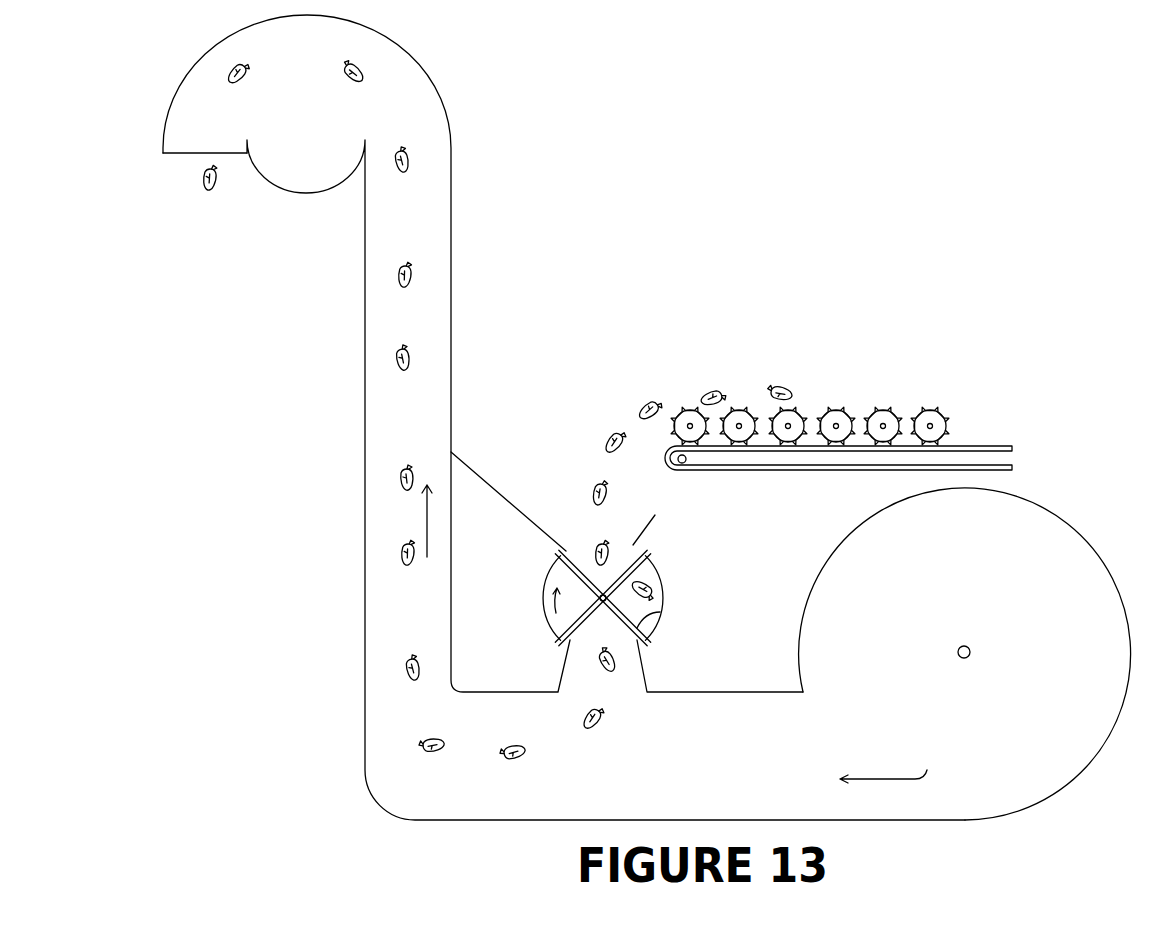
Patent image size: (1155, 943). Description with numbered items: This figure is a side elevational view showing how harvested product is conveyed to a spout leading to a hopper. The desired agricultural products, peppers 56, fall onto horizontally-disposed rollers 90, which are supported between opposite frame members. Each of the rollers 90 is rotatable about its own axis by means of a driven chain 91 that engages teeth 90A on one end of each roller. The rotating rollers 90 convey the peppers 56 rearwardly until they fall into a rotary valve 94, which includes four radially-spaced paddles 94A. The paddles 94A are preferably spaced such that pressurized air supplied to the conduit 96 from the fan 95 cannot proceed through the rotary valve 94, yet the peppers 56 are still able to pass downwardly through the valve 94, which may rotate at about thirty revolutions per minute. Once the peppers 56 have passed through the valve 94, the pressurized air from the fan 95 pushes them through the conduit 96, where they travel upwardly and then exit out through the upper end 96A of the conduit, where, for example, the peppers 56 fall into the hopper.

The peppers 56 is at (222, 180).
The rollers 90 is at (915, 406).
The teeth 90A is at (938, 407).
The driven chain 91 is at (1007, 445).
The rotary valve 94 is at (657, 562).
The paddles 94A is at (657, 615).
The fan 95 is at (1072, 520).
The conduit 96 is at (452, 238).
The upper end 96A is at (182, 154).